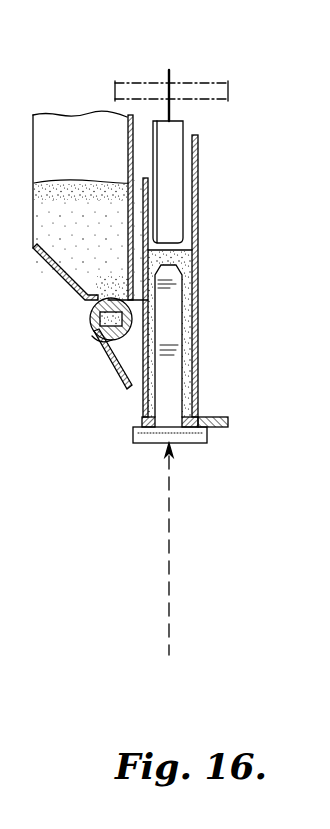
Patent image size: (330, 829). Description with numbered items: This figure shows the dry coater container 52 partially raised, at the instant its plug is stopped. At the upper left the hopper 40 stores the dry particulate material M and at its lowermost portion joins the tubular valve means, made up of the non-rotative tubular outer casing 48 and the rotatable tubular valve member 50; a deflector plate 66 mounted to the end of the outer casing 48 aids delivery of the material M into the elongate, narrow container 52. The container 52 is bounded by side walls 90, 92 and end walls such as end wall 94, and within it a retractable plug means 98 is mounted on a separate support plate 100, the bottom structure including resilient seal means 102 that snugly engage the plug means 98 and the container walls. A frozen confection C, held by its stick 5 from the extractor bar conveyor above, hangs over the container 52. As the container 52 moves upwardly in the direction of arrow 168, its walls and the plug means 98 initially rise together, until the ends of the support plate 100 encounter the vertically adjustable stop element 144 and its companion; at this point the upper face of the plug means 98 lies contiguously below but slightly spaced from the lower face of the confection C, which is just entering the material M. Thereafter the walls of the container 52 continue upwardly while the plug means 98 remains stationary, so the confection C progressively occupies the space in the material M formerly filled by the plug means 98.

The plunger rod 5 is at (171, 74).
The hopper 40 is at (62, 278).
The tubular outer casing 48 is at (97, 304).
The rotatable tubular valve member 50 is at (115, 338).
The deflector plate 66 is at (107, 353).
The side wall 90 is at (199, 216).
The side wall 92 is at (148, 180).
The frozen confection C is at (172, 168).
The end wall 94 is at (186, 250).
The dry particulate material M is at (199, 275).
The retractable plug means 98 is at (173, 321).
The dry coater container 52 is at (210, 360).
The seal means 102 is at (145, 418).
The support plate 100 is at (135, 436).
The stop element 144 is at (218, 416).
The arrow 168 is at (170, 523).